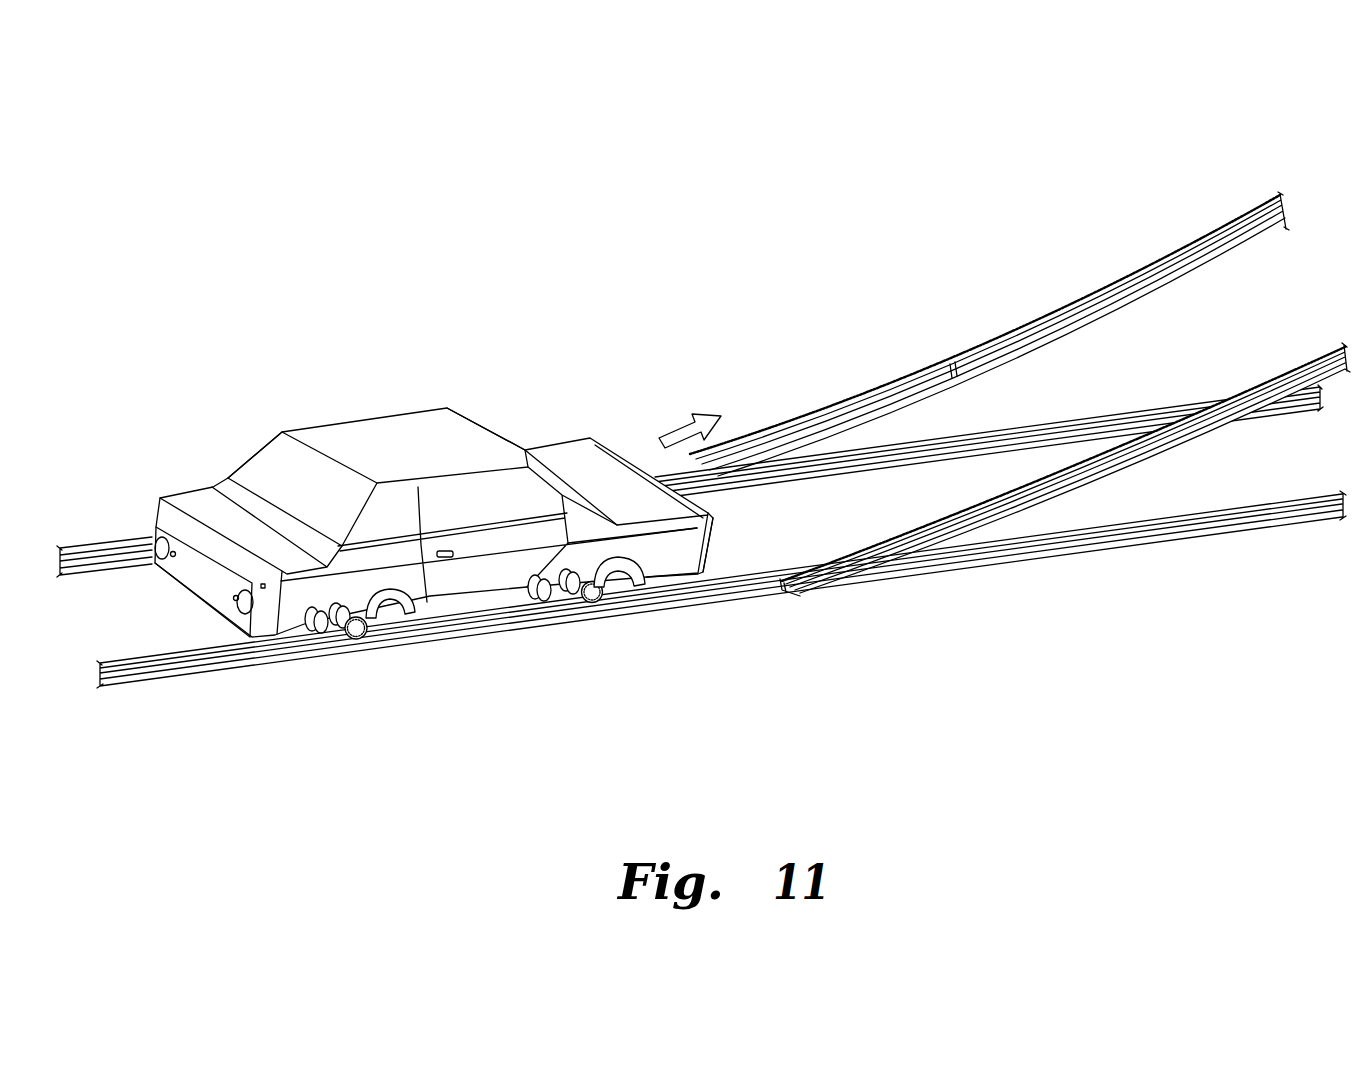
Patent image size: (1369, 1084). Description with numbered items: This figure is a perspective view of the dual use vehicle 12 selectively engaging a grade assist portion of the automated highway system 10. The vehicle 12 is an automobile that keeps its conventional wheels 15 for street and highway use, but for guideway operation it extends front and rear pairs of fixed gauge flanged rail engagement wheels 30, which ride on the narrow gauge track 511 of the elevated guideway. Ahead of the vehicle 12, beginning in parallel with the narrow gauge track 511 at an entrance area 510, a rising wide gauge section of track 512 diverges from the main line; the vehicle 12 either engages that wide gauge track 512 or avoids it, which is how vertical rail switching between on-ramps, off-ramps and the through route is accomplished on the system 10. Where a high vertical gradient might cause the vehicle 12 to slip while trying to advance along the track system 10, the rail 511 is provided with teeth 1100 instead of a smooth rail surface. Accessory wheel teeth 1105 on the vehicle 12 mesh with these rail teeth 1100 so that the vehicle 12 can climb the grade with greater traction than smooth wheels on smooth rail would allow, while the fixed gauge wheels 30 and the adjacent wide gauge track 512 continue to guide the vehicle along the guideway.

The automated highway system 10 is at (763, 182).
The dual use vehicle 12 is at (462, 372).
The conventional wheels 15 is at (418, 613).
The fixed gauge flanged rail engagement wheels 30 is at (323, 633).
The entrance area 510 is at (119, 516).
The narrow gauge track 511 is at (1237, 393).
The wide gauge track 512 is at (780, 431).
The teeth 1100 is at (1020, 507).
The accessory wheel teeth 1105 is at (356, 640).